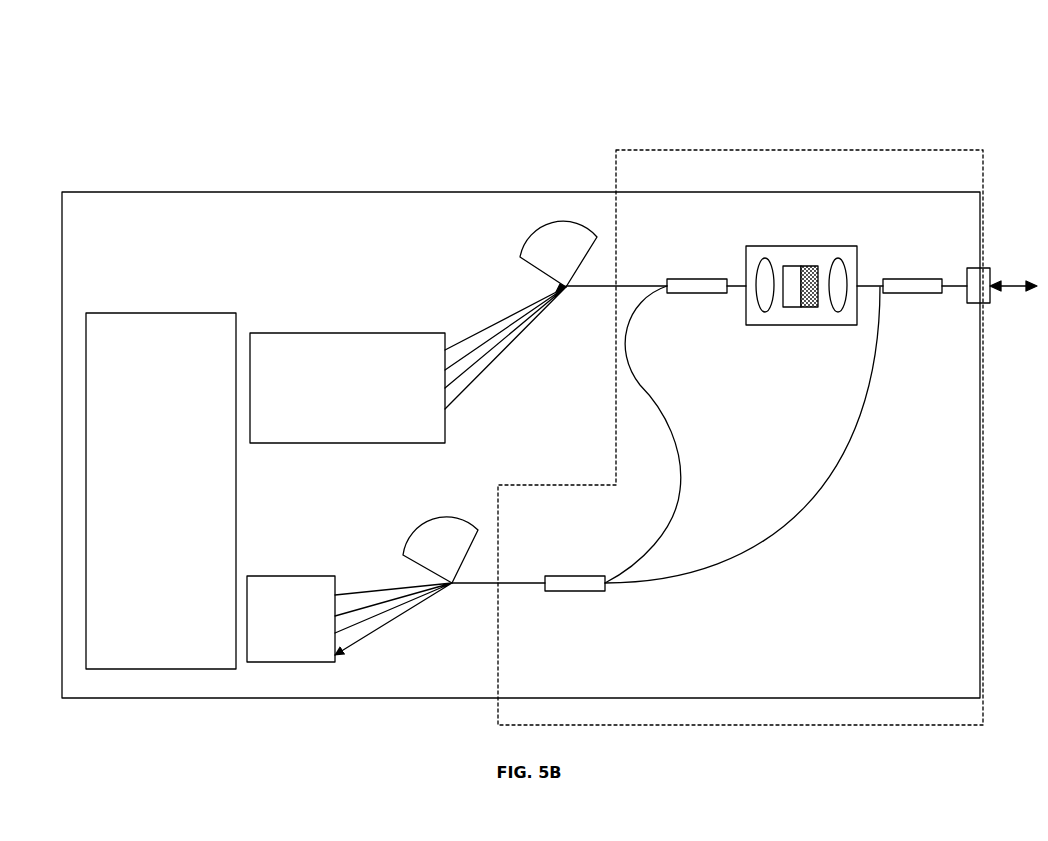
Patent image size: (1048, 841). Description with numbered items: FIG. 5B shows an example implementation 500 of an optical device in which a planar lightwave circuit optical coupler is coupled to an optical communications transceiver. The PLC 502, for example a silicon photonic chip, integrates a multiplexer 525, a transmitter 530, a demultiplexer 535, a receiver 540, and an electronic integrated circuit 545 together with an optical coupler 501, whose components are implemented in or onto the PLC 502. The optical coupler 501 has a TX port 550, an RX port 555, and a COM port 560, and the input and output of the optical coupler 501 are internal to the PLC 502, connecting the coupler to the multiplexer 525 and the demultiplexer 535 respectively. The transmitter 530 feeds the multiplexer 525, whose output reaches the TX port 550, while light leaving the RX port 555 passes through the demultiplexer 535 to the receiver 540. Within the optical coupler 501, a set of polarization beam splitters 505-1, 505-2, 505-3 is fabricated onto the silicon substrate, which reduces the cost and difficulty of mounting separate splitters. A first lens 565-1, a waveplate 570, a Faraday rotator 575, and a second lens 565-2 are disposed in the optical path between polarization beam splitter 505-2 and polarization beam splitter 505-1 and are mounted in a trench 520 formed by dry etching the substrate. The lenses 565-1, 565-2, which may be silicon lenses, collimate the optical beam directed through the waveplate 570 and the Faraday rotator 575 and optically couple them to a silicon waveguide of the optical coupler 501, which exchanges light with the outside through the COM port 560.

The example implementation 500 is at (128, 65).
The optical coupler 501 is at (859, 150).
The planar lightwave circuit (PLC) 502 is at (148, 196).
The polarization beam splitter 505-1 is at (910, 278).
The polarization beam splitter 505-2 is at (697, 278).
The polarization beam splitter 505-3 is at (573, 573).
The trench 520 is at (752, 327).
The multiplexer (MUX) 525 is at (567, 244).
The transmitter (TX) 530 is at (347, 388).
The demultiplexer (DEMUX) 535 is at (468, 520).
The receiver (RX) 540 is at (291, 619).
The electronic integrated circuit (EIC) 545 is at (161, 491).
The TX port 550 is at (581, 292).
The RX port 555 is at (466, 588).
The COM port 560 is at (988, 306).
The lens 565-1 is at (768, 258).
The lens 565-2 is at (843, 257).
The waveplate 570 is at (790, 262).
The Faraday rotator 575 is at (809, 264).